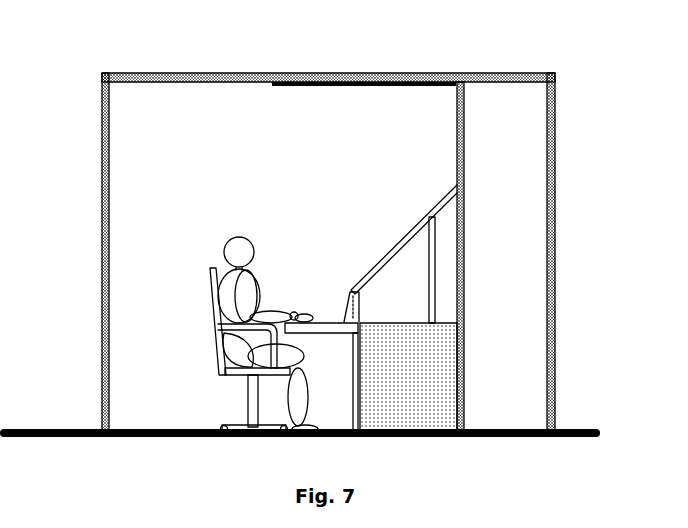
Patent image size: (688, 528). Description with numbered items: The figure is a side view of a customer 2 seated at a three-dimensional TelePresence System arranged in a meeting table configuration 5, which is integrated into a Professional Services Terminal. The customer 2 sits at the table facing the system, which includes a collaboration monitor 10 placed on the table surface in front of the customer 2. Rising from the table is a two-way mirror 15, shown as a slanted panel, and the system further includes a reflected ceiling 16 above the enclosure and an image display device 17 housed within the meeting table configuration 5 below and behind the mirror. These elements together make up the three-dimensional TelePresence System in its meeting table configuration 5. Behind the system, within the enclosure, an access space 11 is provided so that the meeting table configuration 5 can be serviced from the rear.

The customer 2 is at (224, 246).
The meeting table configuration 5 is at (445, 362).
The collaboration monitor 10 is at (343, 316).
The access space 11 is at (502, 156).
The two-way mirror 15 is at (394, 244).
The reflected ceiling 16 is at (366, 88).
The image display device 17 is at (430, 292).